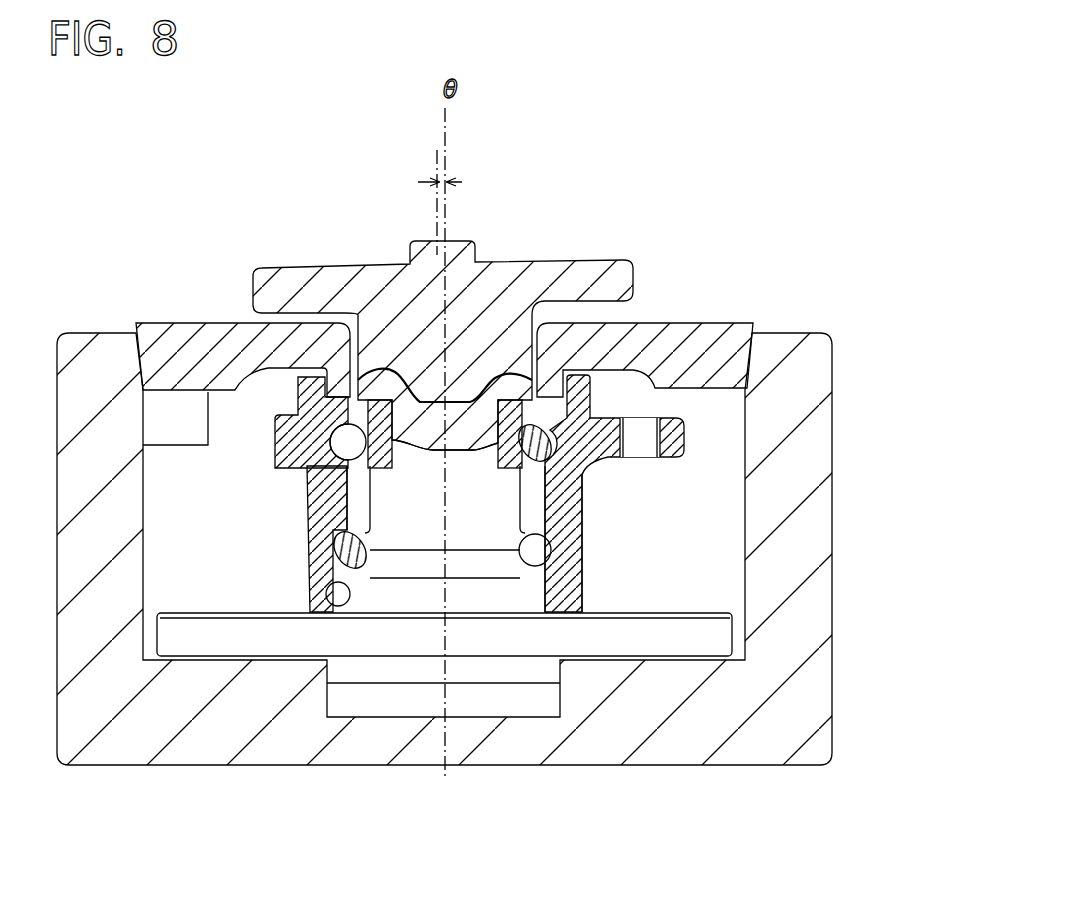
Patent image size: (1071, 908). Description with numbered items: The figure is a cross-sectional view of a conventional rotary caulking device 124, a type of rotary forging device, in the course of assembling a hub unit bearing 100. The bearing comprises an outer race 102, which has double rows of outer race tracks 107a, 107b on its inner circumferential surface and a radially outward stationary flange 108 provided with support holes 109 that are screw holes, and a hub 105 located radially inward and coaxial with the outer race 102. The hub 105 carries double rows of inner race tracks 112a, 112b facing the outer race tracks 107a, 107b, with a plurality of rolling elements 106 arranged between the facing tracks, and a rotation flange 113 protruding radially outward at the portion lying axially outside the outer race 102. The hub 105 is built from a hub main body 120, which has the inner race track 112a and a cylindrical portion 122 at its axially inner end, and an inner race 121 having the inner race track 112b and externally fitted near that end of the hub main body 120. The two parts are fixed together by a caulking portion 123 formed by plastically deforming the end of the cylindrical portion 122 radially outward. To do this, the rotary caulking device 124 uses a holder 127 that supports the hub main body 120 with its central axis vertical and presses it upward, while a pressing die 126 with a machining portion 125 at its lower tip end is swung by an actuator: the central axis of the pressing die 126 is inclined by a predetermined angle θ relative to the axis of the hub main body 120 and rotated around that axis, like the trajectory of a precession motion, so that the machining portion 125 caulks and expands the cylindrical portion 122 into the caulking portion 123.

The hub unit bearing 100 is at (660, 548).
The outer race 102 is at (317, 518).
The hub 105 is at (462, 730).
The rolling elements 106 is at (340, 428).
The outer race track 107a is at (334, 547).
The outer race track 107b is at (294, 463).
The stationary flange 108 is at (677, 425).
The support hole 109 is at (658, 460).
The inner race track 112a is at (352, 572).
The inner race track 112b is at (323, 355).
The rotation flange 113 is at (698, 640).
The hub main body 120 is at (528, 703).
The inner race 121 is at (612, 280).
The cylindrical portion 122 is at (486, 392).
The caulking portion 123 is at (420, 378).
The rotary caulking device 124 is at (728, 290).
The machining portion 125 is at (372, 382).
The pressing die 126 is at (511, 275).
The holder 127 is at (822, 621).